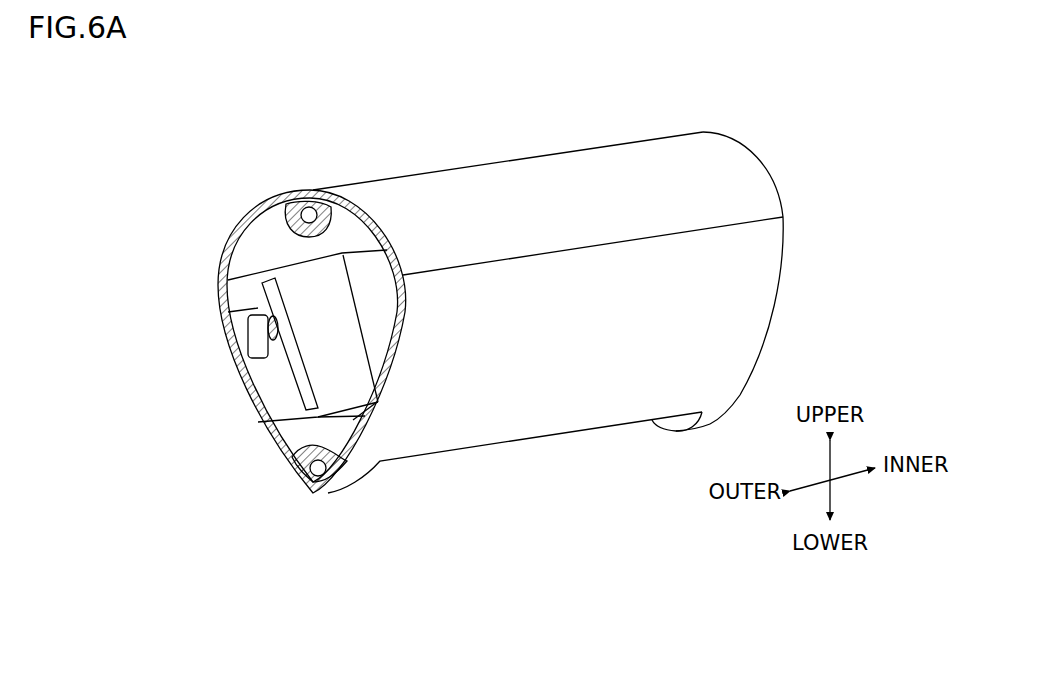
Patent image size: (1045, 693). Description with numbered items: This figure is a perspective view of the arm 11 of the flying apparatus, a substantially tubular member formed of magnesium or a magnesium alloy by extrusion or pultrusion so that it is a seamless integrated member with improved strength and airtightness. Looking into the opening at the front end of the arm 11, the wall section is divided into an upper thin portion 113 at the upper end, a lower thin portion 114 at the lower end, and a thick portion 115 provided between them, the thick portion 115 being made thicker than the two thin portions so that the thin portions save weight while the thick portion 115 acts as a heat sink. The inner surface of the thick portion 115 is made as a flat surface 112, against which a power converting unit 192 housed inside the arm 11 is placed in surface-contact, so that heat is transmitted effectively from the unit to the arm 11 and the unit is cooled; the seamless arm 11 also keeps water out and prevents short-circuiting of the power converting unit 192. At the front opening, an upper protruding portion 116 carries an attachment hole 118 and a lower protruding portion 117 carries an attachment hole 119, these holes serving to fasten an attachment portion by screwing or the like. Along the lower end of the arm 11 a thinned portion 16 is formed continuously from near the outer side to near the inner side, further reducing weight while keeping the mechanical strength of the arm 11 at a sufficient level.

The arm 11 is at (491, 133).
The thinned portion 16 is at (520, 452).
The flat surface 112 is at (270, 380).
The upper thin portion 113 is at (190, 192).
The lower thin portion 114 is at (190, 417).
The thick portion 115 is at (190, 305).
The upper protruding portion 116 is at (287, 217).
The lower protruding portion 117 is at (288, 472).
The attachment hole 118 is at (304, 211).
The attachment hole 119 is at (320, 495).
The power converting unit 192 is at (378, 430).